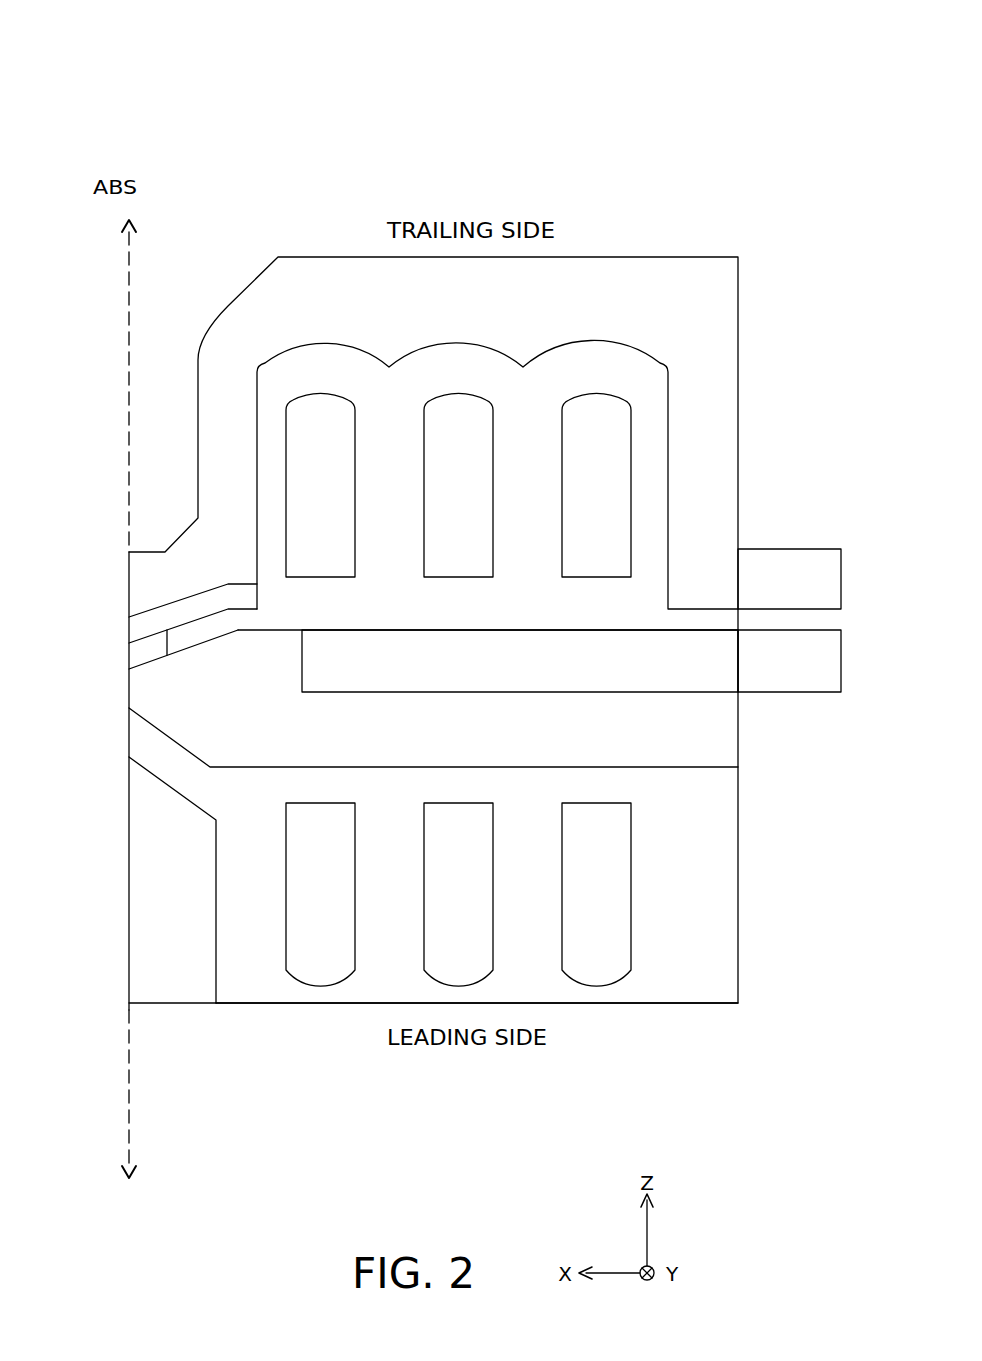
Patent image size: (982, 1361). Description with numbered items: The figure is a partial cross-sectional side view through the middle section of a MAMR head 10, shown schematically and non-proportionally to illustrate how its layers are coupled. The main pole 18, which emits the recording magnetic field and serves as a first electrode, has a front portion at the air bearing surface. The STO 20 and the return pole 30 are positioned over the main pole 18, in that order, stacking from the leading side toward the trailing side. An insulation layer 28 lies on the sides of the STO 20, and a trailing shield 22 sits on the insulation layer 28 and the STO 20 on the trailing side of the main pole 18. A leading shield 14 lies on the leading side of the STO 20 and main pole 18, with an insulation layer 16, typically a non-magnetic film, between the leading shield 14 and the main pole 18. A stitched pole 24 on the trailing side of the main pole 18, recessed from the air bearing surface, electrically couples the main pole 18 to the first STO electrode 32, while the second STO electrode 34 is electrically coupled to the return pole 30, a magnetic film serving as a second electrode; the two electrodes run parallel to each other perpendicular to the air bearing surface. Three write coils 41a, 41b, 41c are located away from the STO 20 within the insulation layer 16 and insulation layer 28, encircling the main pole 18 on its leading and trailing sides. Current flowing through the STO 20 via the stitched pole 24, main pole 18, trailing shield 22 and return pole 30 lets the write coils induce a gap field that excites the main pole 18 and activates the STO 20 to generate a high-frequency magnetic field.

The MAMR head 10 is at (251, 28).
The leading shield 14 is at (161, 890).
The insulation layer 16 is at (229, 814).
The main pole 18 is at (216, 712).
The STO 20 is at (142, 654).
The trailing shield 22 is at (138, 629).
The stitched pole 24 is at (494, 669).
The insulation layer 28 is at (444, 610).
The return pole 30 is at (472, 318).
The first STO electrode 32 is at (778, 672).
The second STO electrode 34 is at (778, 592).
The write coil 41a is at (304, 497).
The write coil 41b is at (441, 497).
The write coil 41c is at (580, 497).